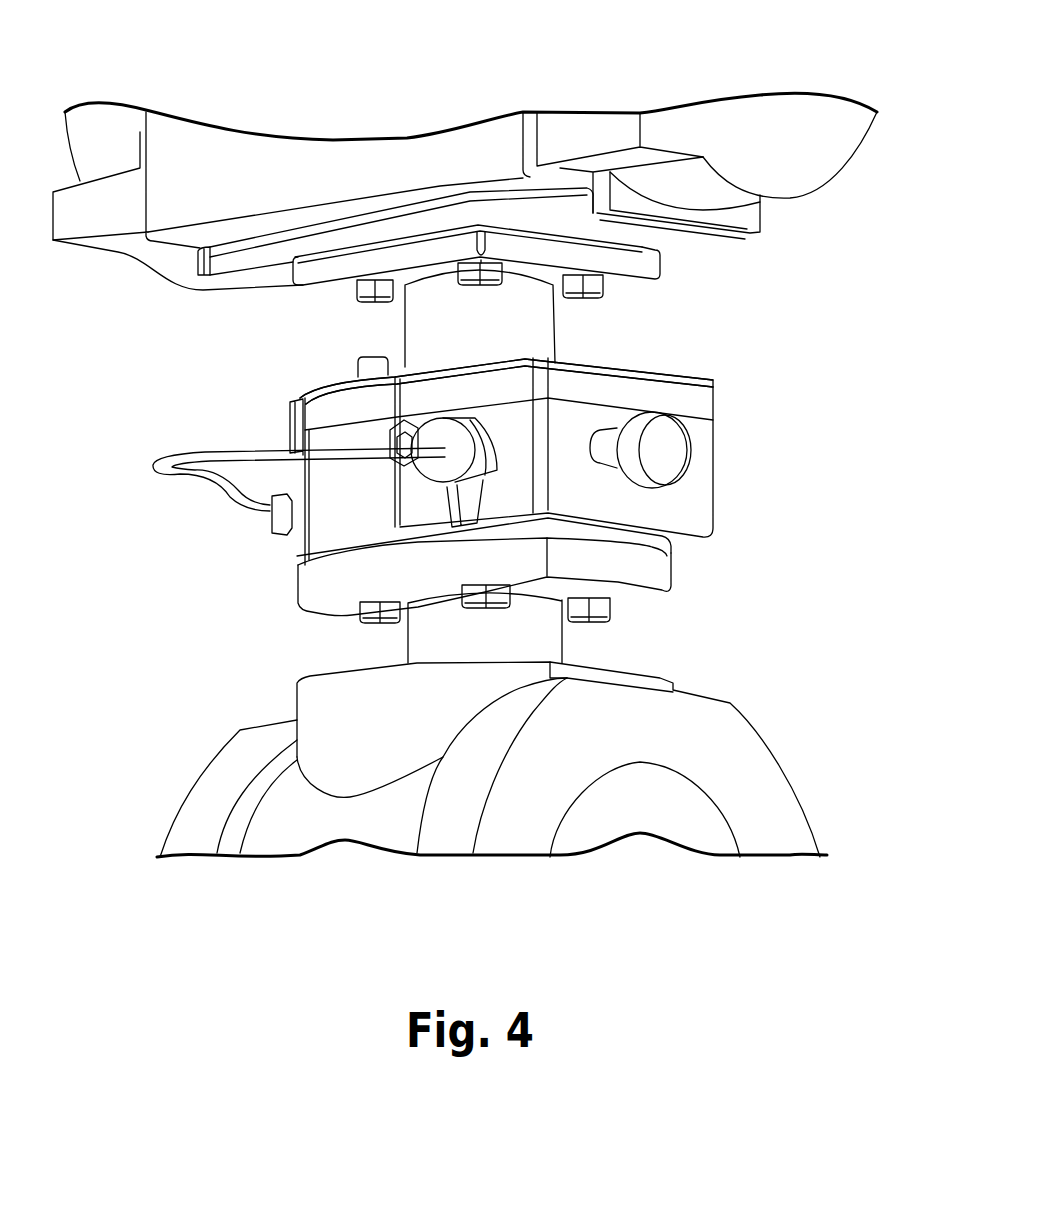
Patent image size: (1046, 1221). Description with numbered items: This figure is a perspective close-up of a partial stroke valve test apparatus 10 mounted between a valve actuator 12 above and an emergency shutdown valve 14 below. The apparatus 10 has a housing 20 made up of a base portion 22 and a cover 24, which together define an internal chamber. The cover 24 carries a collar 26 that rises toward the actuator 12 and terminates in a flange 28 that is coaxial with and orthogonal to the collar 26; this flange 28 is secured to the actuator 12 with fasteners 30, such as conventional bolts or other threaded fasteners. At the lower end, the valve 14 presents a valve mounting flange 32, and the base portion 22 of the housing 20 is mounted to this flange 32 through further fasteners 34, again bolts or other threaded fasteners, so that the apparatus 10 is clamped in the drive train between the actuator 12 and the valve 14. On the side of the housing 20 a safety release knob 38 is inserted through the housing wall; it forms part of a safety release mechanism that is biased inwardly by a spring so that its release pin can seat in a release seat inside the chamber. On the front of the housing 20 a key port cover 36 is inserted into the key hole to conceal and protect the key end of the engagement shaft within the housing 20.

The partial stroke valve test apparatus 10 is at (731, 485).
The valve actuator 12 is at (362, 157).
The emergency shutdown valve 14 is at (676, 812).
The housing 20 is at (716, 525).
The base portion 22 is at (681, 519).
The cover 24 is at (686, 393).
The collar 26 is at (543, 328).
The flange 28 is at (652, 259).
The fasteners 30 is at (484, 232).
The valve mounting flange 32 is at (308, 577).
The fasteners 34 is at (370, 611).
The key port cover 36 is at (455, 483).
The safety release knob 38 is at (668, 447).